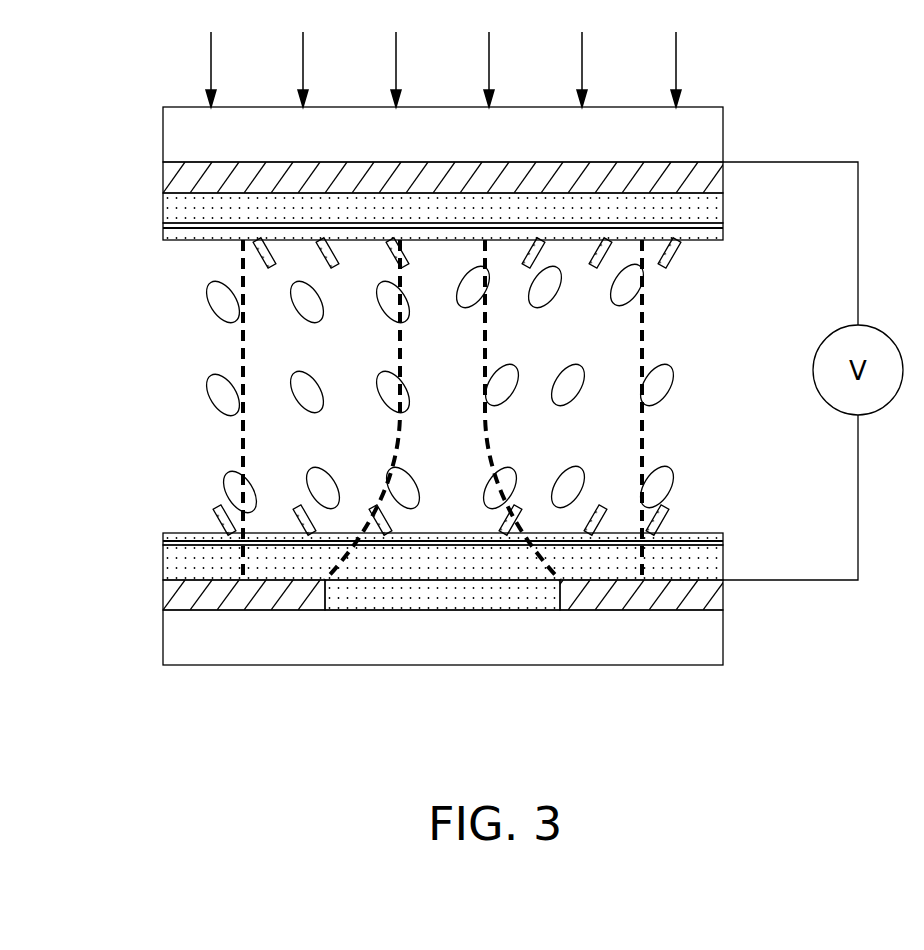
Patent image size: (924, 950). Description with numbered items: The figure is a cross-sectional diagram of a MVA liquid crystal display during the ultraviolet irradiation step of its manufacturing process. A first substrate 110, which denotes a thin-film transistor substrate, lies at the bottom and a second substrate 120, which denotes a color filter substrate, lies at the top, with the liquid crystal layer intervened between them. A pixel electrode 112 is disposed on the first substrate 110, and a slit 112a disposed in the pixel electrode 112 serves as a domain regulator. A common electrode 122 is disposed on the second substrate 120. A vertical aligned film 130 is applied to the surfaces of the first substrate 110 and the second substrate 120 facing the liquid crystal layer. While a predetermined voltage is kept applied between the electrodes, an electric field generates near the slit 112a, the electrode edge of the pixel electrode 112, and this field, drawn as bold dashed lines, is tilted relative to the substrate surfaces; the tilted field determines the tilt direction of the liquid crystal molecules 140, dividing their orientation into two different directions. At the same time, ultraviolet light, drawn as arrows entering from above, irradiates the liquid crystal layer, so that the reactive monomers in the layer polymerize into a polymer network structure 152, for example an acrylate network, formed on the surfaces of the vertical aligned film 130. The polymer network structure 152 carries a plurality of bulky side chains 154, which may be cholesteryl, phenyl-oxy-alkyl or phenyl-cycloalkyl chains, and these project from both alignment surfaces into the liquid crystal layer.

The first substrate 110 is at (163, 640).
The pixel electrode 112 is at (163, 597).
The slit 112a is at (442, 600).
The second substrate 120 is at (163, 138).
The common electrode 122 is at (163, 185).
The vertical aligned film 130 is at (163, 212).
The liquid crystal molecules 140 is at (665, 380).
The polymer network structure 152 is at (723, 232).
The bulky side chains 154 is at (685, 262).